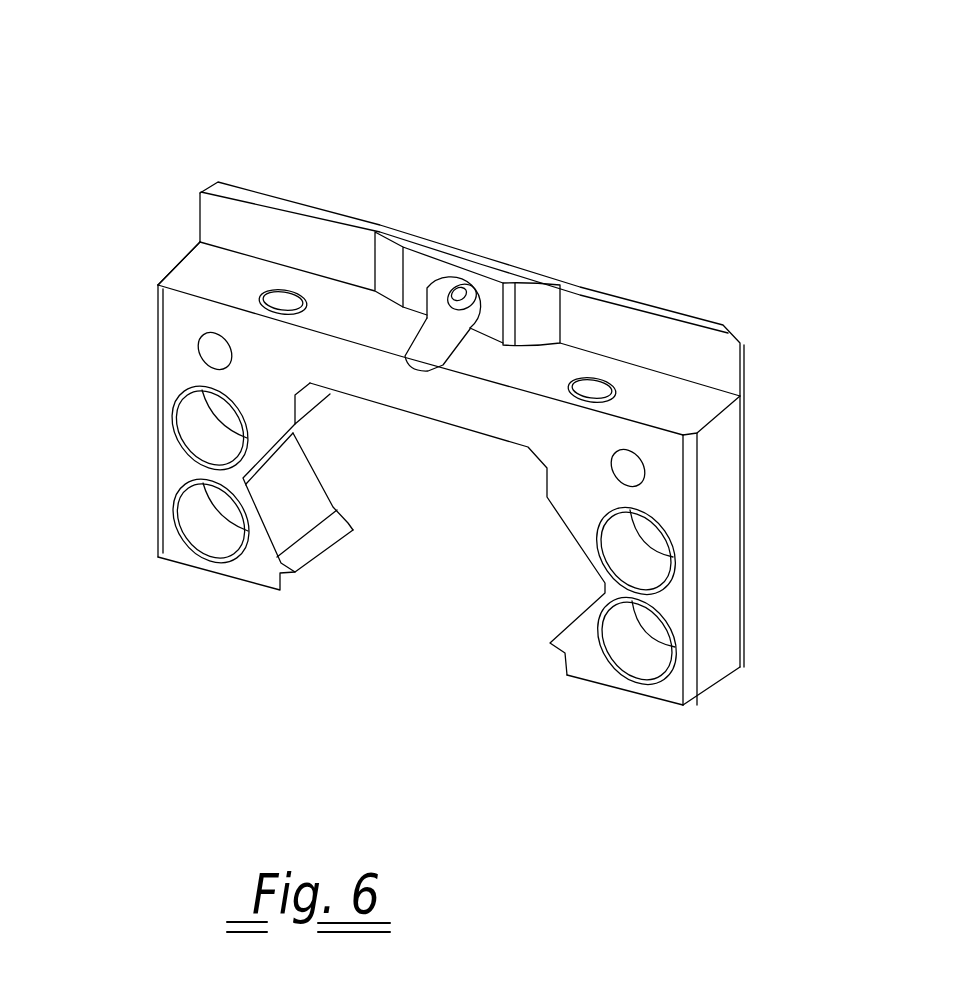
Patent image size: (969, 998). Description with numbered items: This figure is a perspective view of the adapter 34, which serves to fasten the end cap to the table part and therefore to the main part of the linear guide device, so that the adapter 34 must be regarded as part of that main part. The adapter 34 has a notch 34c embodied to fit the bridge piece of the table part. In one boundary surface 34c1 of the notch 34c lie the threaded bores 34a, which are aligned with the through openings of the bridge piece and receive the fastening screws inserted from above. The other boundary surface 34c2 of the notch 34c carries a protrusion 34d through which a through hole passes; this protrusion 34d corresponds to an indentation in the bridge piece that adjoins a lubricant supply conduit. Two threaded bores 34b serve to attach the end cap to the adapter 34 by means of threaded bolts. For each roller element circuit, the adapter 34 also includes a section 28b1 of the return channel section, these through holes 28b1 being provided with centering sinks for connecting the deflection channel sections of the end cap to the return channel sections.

The adapter 34 is at (742, 112).
The threaded bores 34a is at (283, 300).
The threaded bores 34b is at (204, 348).
The notch 34c is at (714, 360).
The boundary surface 34c1 is at (199, 276).
The boundary surface 34c2 is at (231, 224).
The protrusion 34d is at (427, 256).
The section of the return channel section 28b1 is at (205, 424).